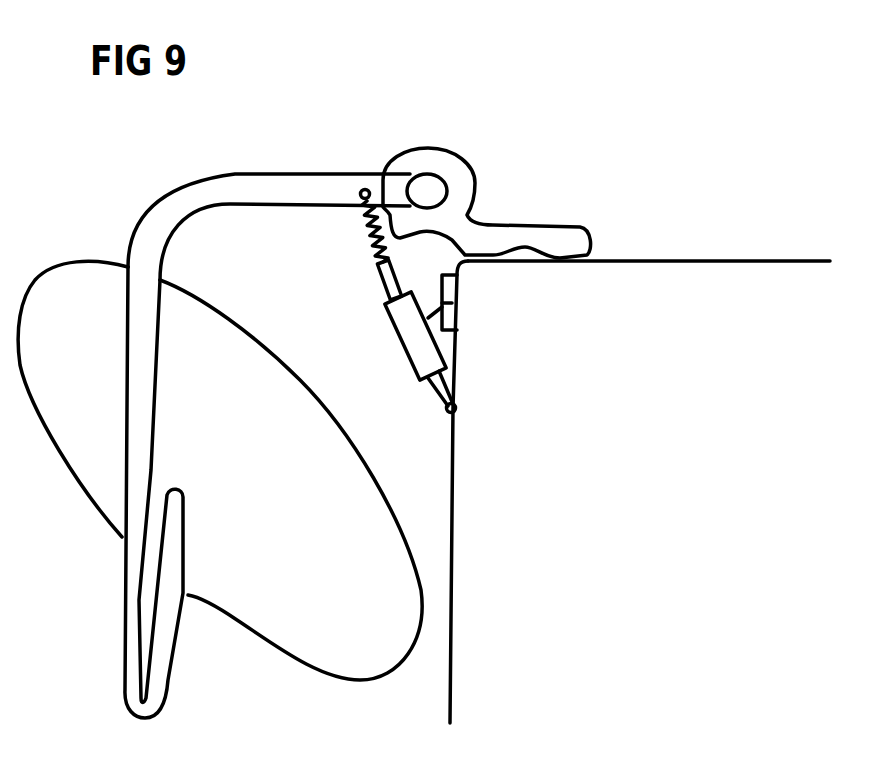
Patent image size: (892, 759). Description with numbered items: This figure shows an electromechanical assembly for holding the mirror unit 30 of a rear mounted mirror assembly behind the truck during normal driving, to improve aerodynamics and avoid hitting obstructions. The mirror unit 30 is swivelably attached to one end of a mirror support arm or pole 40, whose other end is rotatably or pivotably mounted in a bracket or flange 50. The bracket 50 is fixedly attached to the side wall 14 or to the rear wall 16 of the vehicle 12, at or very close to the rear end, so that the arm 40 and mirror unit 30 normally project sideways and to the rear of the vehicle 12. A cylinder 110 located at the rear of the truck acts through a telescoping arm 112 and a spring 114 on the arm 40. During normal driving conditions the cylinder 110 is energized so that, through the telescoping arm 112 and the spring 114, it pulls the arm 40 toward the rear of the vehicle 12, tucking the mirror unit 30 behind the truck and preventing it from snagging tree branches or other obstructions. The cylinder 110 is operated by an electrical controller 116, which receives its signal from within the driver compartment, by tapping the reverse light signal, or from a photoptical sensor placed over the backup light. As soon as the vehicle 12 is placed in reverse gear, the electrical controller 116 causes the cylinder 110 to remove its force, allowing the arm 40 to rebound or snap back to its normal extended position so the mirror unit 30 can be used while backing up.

The vehicle 12 is at (705, 491).
The side panel or wall 14 is at (740, 261).
The rear panel or wall 16 is at (452, 466).
The mirror unit 30 is at (72, 265).
The mirror support arm or pole 40 is at (273, 187).
The bracket or flange 50 is at (462, 170).
The cylinder 110 is at (408, 330).
The telescoping arm 112 is at (383, 275).
The spring 114 is at (370, 240).
The electrical controller 116 is at (443, 273).